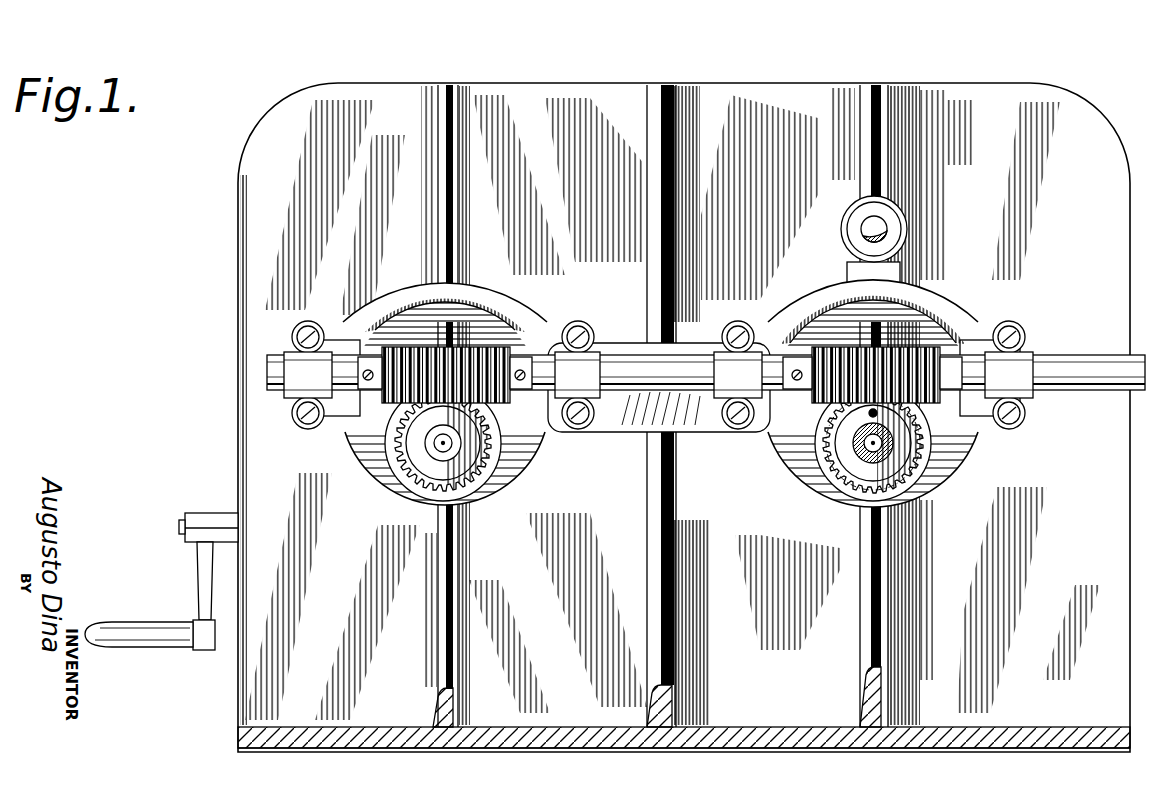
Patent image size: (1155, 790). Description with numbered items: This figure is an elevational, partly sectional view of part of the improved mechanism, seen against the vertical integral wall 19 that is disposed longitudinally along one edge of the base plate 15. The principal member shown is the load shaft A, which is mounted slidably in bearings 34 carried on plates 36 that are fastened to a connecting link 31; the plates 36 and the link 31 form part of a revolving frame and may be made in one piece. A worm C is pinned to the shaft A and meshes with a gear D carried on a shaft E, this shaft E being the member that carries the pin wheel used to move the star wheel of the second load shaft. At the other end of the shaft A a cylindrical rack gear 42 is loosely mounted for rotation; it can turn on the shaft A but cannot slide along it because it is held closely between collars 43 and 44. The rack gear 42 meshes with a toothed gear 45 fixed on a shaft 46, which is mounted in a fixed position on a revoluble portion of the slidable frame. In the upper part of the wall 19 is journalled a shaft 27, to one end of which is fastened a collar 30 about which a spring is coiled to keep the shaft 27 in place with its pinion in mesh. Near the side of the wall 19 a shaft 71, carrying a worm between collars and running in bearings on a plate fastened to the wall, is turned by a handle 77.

The base plate 15 is at (752, 730).
The vertical integral wall 19 is at (689, 200).
The shaft 27 is at (848, 226).
The collar 30 is at (890, 228).
The connecting link 31 is at (618, 426).
The bearing 34 is at (298, 360).
The plate 36 is at (942, 314).
The cylindrical rack gear 42 is at (462, 344).
The collar 43 is at (360, 398).
The collar 44 is at (522, 355).
The toothed gear 45 is at (462, 470).
The shaft 46 is at (440, 446).
The shaft 71 is at (186, 536).
The handle 77 is at (200, 593).
The load shaft A is at (1094, 356).
The worm C is at (881, 350).
The gear D is at (905, 470).
The shaft E is at (860, 456).